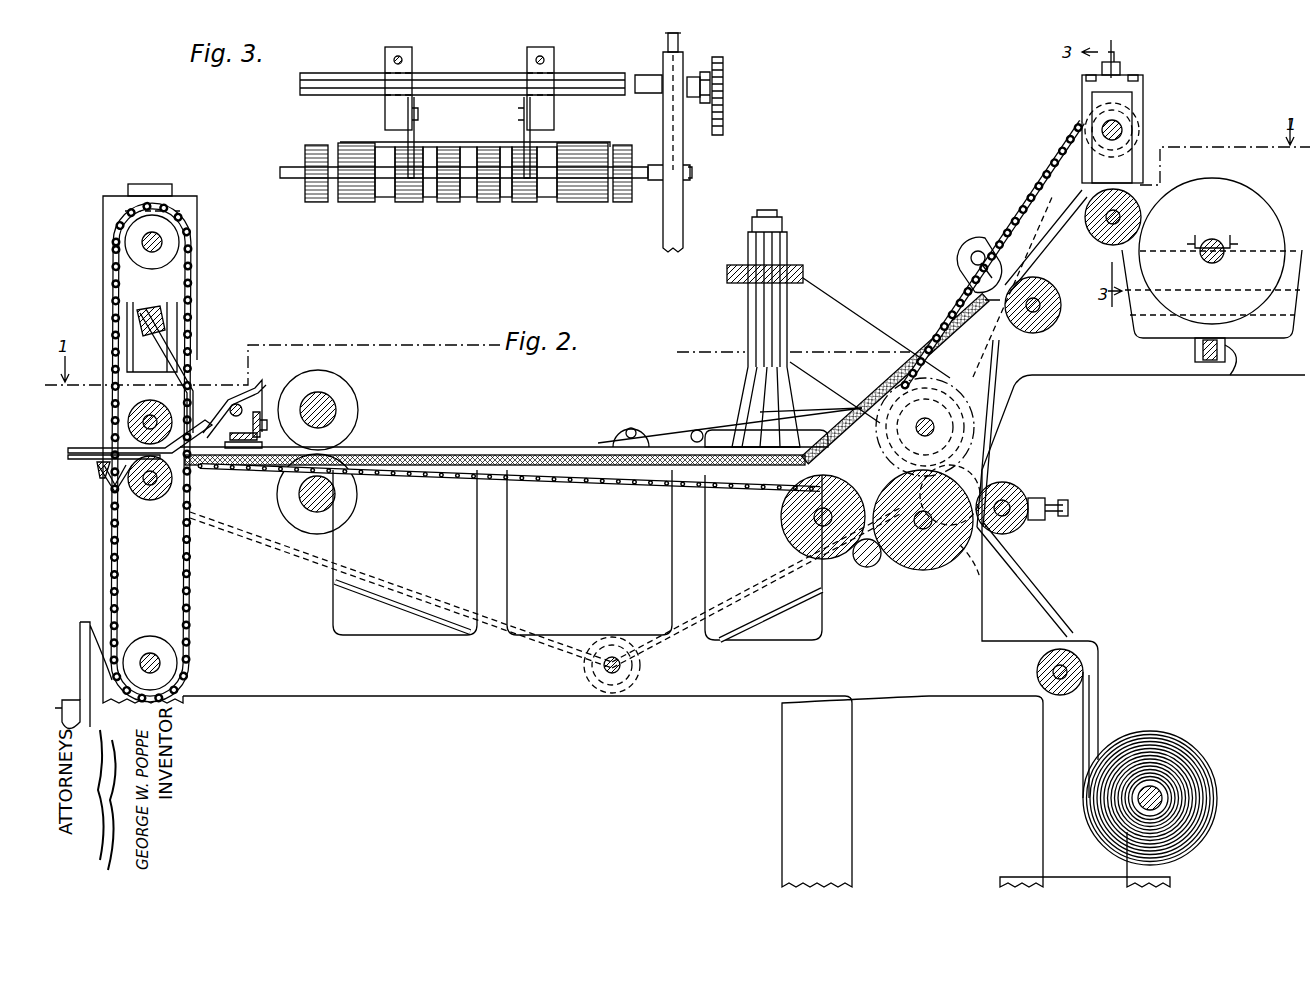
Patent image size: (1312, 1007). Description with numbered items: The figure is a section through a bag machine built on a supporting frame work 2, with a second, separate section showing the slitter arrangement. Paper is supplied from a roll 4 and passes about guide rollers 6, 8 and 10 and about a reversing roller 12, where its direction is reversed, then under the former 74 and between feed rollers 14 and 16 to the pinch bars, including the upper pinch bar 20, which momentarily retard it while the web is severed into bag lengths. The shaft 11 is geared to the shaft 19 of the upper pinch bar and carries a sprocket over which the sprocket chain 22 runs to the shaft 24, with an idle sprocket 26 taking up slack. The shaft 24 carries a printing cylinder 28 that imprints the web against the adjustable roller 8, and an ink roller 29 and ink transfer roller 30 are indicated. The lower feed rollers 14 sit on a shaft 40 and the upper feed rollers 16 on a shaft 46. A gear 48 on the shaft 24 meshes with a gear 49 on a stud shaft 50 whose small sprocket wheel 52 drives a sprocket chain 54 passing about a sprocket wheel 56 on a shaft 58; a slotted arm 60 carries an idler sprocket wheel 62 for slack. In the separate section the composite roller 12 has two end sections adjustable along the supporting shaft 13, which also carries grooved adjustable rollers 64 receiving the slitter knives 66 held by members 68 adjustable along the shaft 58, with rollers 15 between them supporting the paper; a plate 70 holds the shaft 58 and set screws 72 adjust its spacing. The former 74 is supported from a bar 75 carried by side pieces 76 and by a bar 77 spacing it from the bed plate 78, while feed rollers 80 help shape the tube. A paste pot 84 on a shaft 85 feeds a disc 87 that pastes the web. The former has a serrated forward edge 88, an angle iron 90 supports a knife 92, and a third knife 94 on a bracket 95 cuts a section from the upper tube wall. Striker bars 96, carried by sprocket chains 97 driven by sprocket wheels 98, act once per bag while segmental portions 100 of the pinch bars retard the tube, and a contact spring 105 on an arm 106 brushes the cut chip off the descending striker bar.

In FIG. 2, the supporting frame work 2 is at (890, 742).
In FIG. 2, the roll 4 is at (1142, 740).
In FIG. 2, the guide roller 6 is at (1036, 672).
In FIG. 2, the guide roller 8 is at (1022, 522).
In FIG. 2, the guide roller 10 is at (1060, 318).
In FIG. 2, the shaft 11 is at (110, 488).
In FIG. 3, the reversing roller 12 is at (316, 145).
In FIG. 2, the reversing roller 12 is at (1135, 200).
In FIG. 3, the supporting shaft 13 is at (293, 178).
In FIG. 2, the supporting shaft 13 is at (140, 500).
In FIG. 2, the lower feed rollers 14 is at (350, 500).
In FIG. 3, the rollers 15 is at (450, 200).
In FIG. 2, the upper feed rollers 16 is at (325, 385).
In FIG. 2, the shaft 19 is at (128, 422).
In FIG. 2, the pinch bar 20 is at (152, 404).
In FIG. 2, the sprocket chain 22 is at (385, 595).
In FIG. 2, the shaft 24 is at (925, 568).
In FIG. 2, the idle sprocket 26 is at (608, 690).
In FIG. 2, the printing cylinder 28 is at (968, 480).
In FIG. 2, the ink roller 29 is at (805, 545).
In FIG. 2, the ink transfer roller 30 is at (872, 568).
In FIG. 2, the shaft 40 is at (318, 496).
In FIG. 2, the shaft 46 is at (336, 410).
In FIG. 2, the gear 48 is at (978, 578).
In FIG. 2, the gear 49 is at (970, 440).
In FIG. 2, the stud shaft 50 is at (925, 418).
In FIG. 2, the small sprocket wheel 52 is at (975, 395).
In FIG. 3, the sprocket chain 54 is at (708, 100).
In FIG. 2, the sprocket chain 54 is at (935, 325).
In FIG. 3, the sprocket wheel 56 is at (724, 68).
In FIG. 2, the sprocket wheel 56 is at (1085, 128).
In FIG. 3, the shaft 58 is at (320, 73).
In FIG. 2, the shaft 58 is at (1105, 128).
In FIG. 2, the slotted arm 60 is at (1000, 268).
In FIG. 2, the idler sprocket wheel 62 is at (985, 248).
In FIG. 3, the adjustable rollers 64 is at (410, 200).
In FIG. 3, the slitter knives 66 is at (414, 132).
In FIG. 2, the slitter knives 66 is at (1092, 160).
In FIG. 3, the members 68 is at (412, 60).
In FIG. 2, the members 68 is at (1140, 126).
In FIG. 3, the plate 70 is at (665, 50).
In FIG. 2, the plate 70 is at (1143, 86).
In FIG. 3, the set screws 72 is at (680, 50).
In FIG. 2, the former 74 is at (540, 450).
In FIG. 2, the bar 75 is at (727, 276).
In FIG. 2, the side pieces 76 is at (828, 310).
In FIG. 2, the bar 77 is at (760, 318).
In FIG. 2, the bed plate 78 is at (1118, 65).
In FIG. 2, the feed rollers 80 is at (630, 428).
In FIG. 2, the paste pot 84 is at (1270, 342).
In FIG. 2, the shaft 85 is at (1228, 368).
In FIG. 2, the disc 87 is at (1250, 200).
In FIG. 2, the serrated forward edge 88 is at (222, 458).
In FIG. 2, the angle iron 90 is at (238, 455).
In FIG. 2, the knife 92 is at (240, 462).
In FIG. 2, the knife 94 is at (188, 368).
In FIG. 2, the bracket 95 is at (163, 320).
In FIG. 2, the striker bar 96 is at (95, 468).
In FIG. 2, the sprocket chains 97 is at (192, 276).
In FIG. 2, the sprocket wheels 98 is at (168, 232).
In FIG. 2, the segmental portions 100 is at (110, 448).
In FIG. 2, the contact spring 105 is at (95, 640).
In FIG. 2, the arm 106 is at (80, 668).